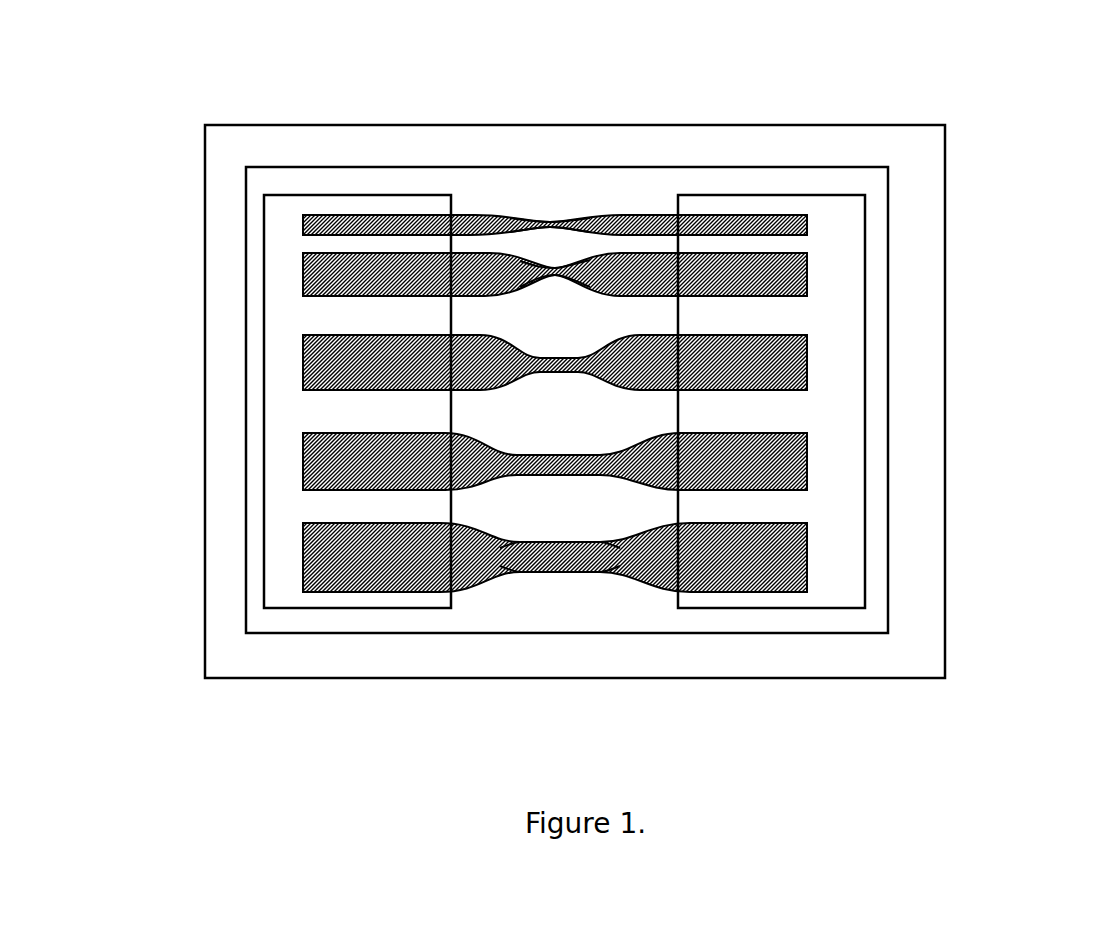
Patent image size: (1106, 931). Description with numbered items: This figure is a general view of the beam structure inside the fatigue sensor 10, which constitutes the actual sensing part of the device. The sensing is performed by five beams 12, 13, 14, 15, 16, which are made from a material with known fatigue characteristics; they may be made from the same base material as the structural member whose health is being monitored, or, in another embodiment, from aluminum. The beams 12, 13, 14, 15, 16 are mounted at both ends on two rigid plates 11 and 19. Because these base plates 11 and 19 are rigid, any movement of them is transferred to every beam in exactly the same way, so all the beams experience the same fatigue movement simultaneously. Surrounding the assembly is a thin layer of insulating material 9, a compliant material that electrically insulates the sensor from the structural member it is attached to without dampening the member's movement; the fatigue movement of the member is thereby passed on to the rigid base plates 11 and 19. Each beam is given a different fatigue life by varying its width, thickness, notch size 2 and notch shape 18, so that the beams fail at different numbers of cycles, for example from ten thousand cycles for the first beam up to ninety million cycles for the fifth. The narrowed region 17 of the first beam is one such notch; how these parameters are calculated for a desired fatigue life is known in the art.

The sensor 10 is at (951, 153).
The insulating material 9 is at (894, 373).
The rigid plate 19 is at (251, 236).
The rigid plate 11 is at (873, 270).
The beam 12 is at (394, 211).
The beam 13 is at (291, 282).
The beam 14 is at (291, 365).
The beam 15 is at (291, 474).
The beam 16 is at (291, 572).
The necked gauge region of first strip 17 is at (530, 206).
The notch size 2 is at (560, 259).
The notch shape 18 is at (595, 581).